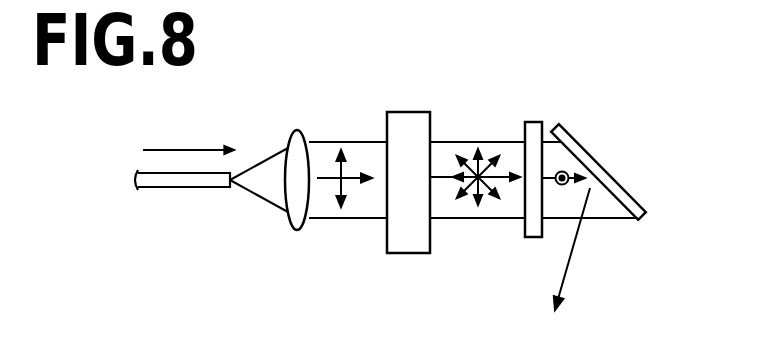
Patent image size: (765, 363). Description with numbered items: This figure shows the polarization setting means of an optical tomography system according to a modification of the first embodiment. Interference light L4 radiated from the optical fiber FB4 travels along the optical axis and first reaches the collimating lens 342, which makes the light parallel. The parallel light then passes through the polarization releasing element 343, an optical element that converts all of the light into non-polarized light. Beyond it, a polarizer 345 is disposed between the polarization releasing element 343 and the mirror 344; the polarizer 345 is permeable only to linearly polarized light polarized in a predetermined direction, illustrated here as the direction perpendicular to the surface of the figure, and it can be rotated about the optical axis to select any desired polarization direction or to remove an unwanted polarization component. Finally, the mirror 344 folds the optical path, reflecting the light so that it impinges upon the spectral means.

The interference light L4 is at (189, 138).
The optical fiber FB4 is at (183, 188).
The collimating lens 342 is at (296, 130).
The polarization releasing element 343 is at (397, 112).
The mirror 344 is at (583, 145).
The polarizer 345 is at (530, 122).